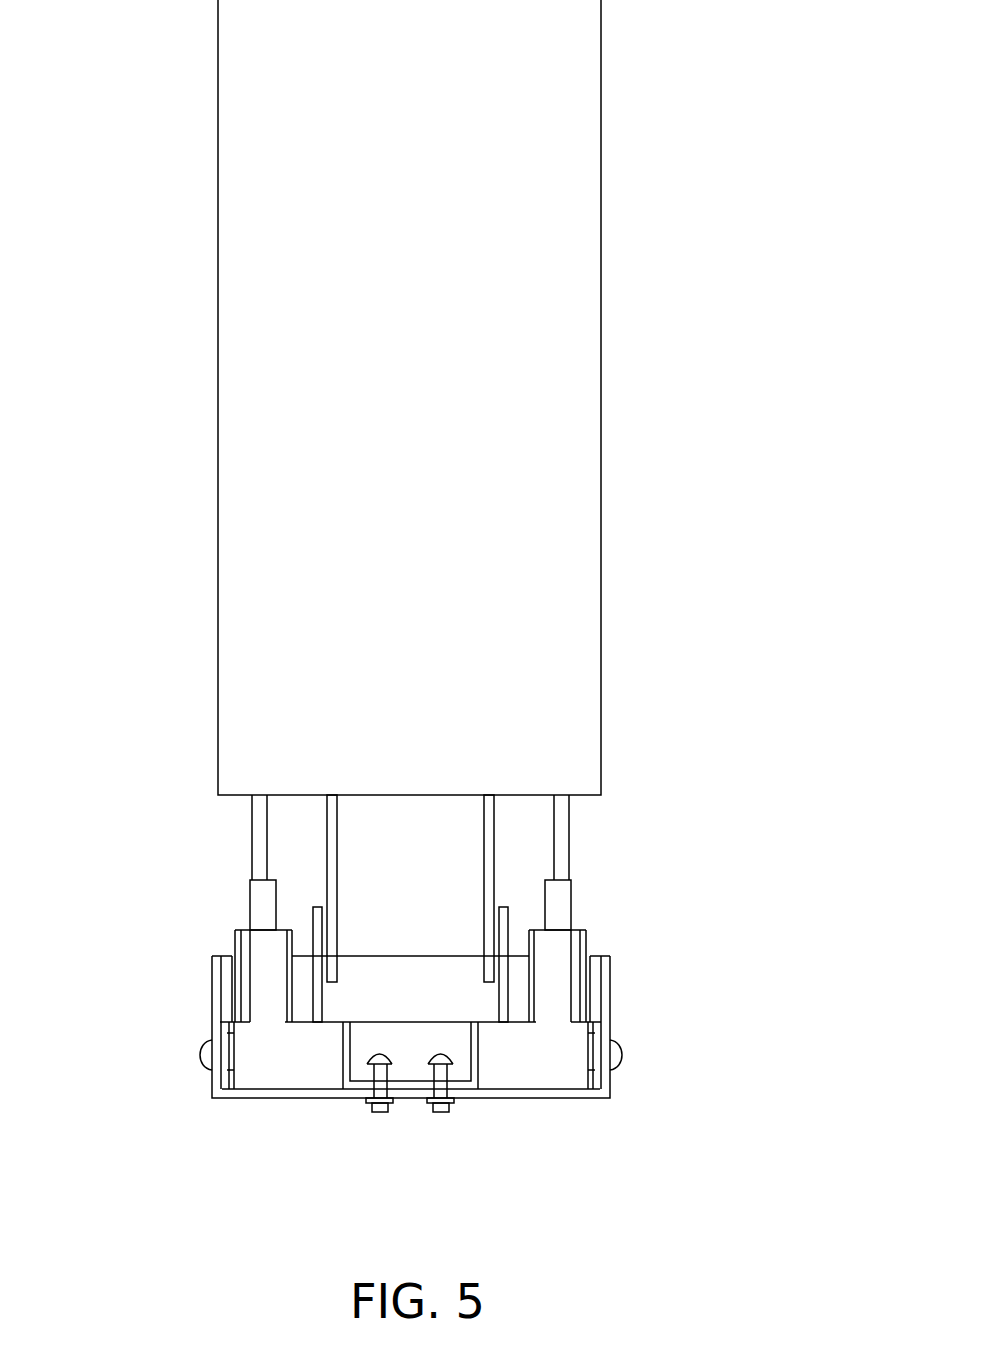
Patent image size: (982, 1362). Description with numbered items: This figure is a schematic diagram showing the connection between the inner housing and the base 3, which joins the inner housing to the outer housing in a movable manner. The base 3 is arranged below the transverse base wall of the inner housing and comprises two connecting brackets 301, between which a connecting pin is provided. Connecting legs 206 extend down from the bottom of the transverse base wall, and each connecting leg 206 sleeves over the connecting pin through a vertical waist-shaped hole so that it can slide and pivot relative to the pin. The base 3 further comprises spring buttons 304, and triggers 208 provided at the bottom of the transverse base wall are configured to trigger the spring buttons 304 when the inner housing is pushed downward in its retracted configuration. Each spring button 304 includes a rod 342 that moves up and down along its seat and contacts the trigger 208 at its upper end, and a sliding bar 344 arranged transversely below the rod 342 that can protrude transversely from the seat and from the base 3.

The base 3 is at (560, 1100).
The connecting leg 206 is at (327, 835).
The trigger 208 is at (258, 842).
The connecting bracket 301 is at (320, 998).
The spring button 304 is at (295, 1073).
The rod 342 is at (257, 902).
The sliding bar 344 is at (198, 1055).